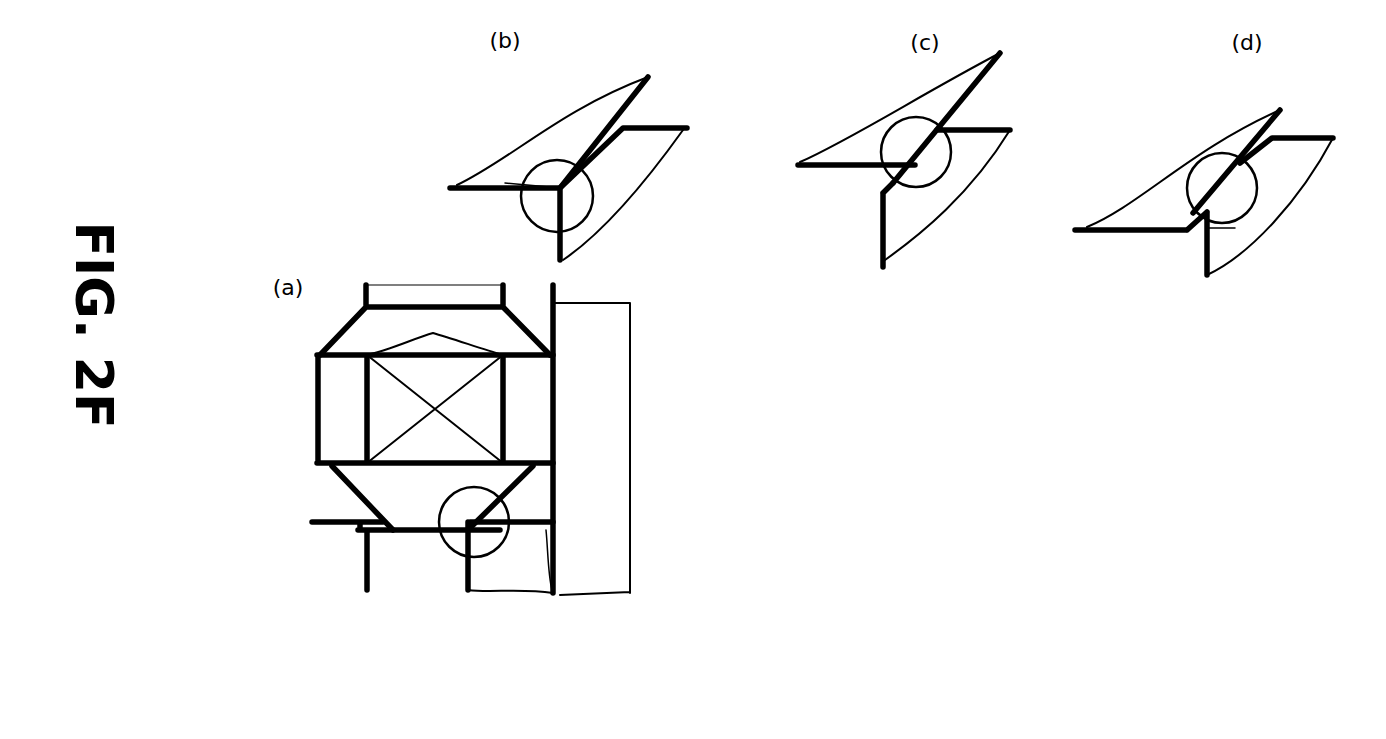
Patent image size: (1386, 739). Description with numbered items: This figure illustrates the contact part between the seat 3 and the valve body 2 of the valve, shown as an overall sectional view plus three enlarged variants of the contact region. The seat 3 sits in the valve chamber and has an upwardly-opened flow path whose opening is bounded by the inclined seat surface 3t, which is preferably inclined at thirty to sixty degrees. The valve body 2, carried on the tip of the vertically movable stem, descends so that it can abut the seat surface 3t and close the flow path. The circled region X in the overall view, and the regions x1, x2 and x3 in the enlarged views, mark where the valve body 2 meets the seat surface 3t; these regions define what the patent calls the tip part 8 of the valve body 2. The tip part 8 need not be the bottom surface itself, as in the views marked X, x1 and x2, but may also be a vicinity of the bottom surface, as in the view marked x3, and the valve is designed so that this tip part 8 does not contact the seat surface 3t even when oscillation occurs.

The valve body 2 is at (505, 468).
The seat 3 is at (610, 210).
The seat surface 3t is at (598, 135).
The tip part 8 is at (557, 160).
The contact area of valve body with seat surface X is at (510, 513).
The contact area of valve body with seat surface x1 is at (505, 183).
The contact area of valve body with seat surface x2 is at (905, 170).
The contact area of valve body with seat surface x3 is at (1235, 228).